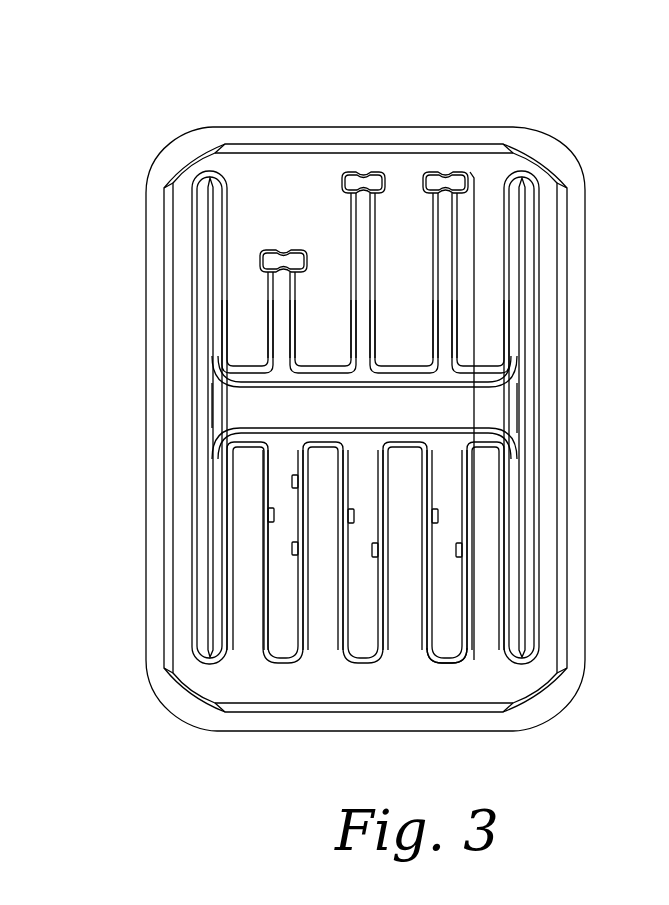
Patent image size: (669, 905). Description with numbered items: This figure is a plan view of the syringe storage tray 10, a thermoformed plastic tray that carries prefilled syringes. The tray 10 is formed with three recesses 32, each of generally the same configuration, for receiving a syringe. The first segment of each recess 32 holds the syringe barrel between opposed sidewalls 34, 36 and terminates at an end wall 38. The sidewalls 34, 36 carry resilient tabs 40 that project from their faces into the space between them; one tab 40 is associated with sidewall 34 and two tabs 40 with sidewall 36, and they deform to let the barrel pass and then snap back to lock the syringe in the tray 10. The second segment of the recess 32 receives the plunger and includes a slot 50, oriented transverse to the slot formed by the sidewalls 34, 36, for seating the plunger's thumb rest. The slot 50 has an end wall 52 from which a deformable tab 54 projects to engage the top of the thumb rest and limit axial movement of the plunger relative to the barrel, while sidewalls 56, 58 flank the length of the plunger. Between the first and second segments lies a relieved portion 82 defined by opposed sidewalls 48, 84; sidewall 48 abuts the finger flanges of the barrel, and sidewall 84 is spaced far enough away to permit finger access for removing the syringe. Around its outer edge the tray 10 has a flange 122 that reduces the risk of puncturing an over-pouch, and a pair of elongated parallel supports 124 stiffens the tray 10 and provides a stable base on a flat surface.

The syringe storage tray 10 is at (193, 746).
The recess 32 is at (476, 264).
The sidewall 34 is at (281, 595).
The sidewall 36 is at (300, 617).
The end wall 38 is at (451, 656).
The tab 40 is at (297, 483).
The sidewall 48 is at (240, 383).
The slot 50 is at (308, 261).
The end wall 52 is at (343, 170).
The tab 54 is at (283, 249).
The sidewall 56 is at (283, 326).
The sidewall 58 is at (286, 348).
The relieved portion 82 is at (517, 408).
The sidewall 84 is at (248, 441).
The flange 122 is at (157, 665).
The elongated parallel support 124 is at (207, 569).